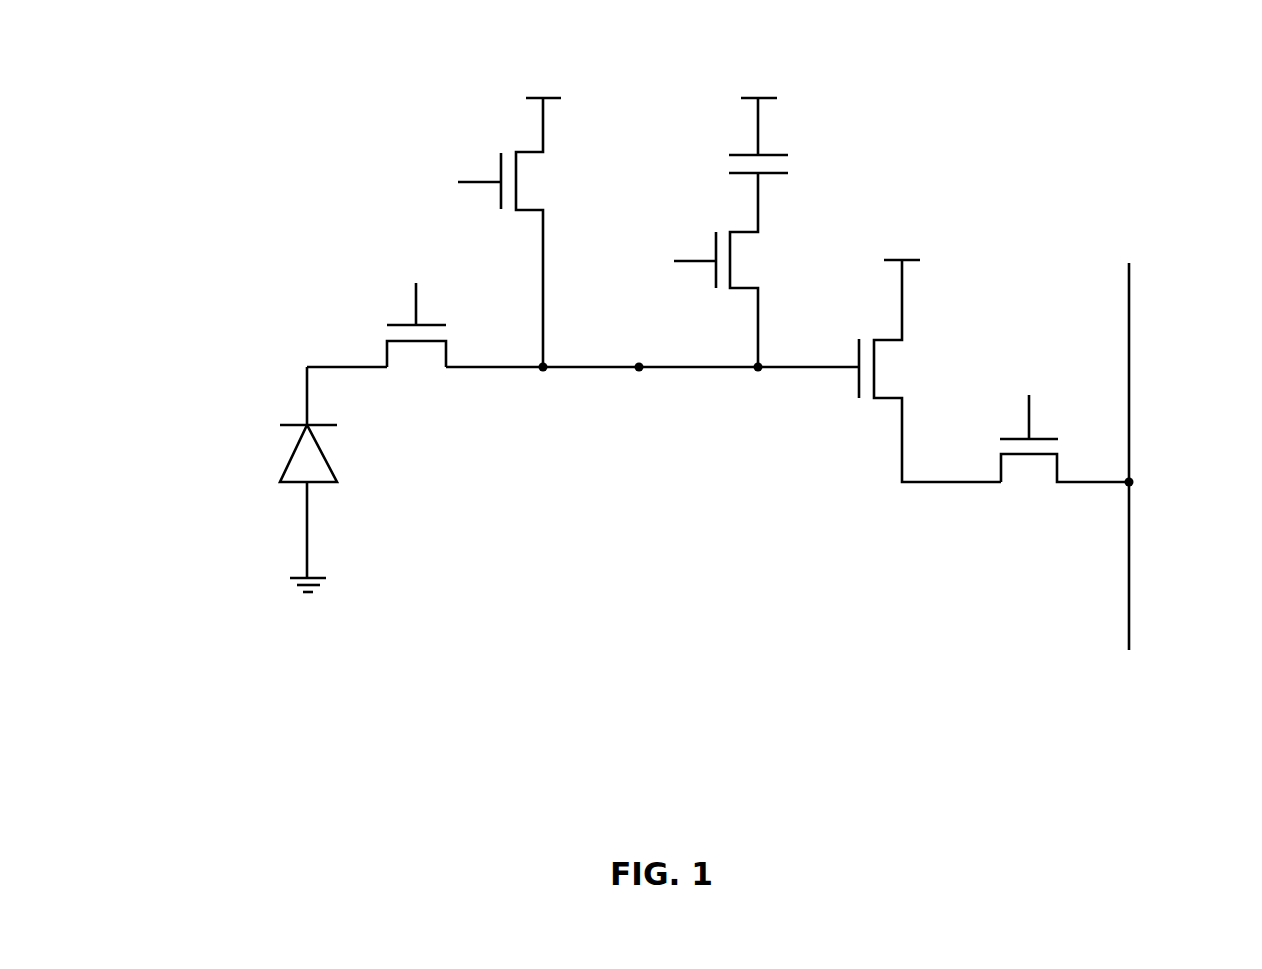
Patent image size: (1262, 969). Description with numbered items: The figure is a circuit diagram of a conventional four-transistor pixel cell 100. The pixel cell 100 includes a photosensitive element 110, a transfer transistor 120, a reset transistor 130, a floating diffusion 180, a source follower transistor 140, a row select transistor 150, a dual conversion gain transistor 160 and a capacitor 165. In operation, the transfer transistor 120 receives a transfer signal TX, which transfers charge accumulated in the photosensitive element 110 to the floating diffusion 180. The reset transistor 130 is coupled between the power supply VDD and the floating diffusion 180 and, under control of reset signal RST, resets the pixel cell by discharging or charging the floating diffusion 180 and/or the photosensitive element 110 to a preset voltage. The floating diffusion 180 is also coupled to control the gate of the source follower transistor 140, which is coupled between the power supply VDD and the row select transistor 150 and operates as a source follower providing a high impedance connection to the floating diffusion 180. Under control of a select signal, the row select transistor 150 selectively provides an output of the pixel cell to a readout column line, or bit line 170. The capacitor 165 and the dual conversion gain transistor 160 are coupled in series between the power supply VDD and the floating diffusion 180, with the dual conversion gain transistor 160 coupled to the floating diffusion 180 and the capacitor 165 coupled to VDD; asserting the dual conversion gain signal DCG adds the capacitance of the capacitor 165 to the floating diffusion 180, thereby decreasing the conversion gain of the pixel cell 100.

The pixel cell 100 is at (1072, 40).
The photosensitive element 110 is at (275, 453).
The transfer transistor 120 is at (420, 365).
The reset transistor 130 is at (528, 181).
The source follower transistor 140 is at (898, 367).
The row select transistor 150 is at (1026, 477).
The dual conversion gain transistor 160 is at (743, 250).
The capacitor 165 is at (790, 163).
The bit line 170 is at (1130, 350).
The floating diffusion 180 is at (648, 382).